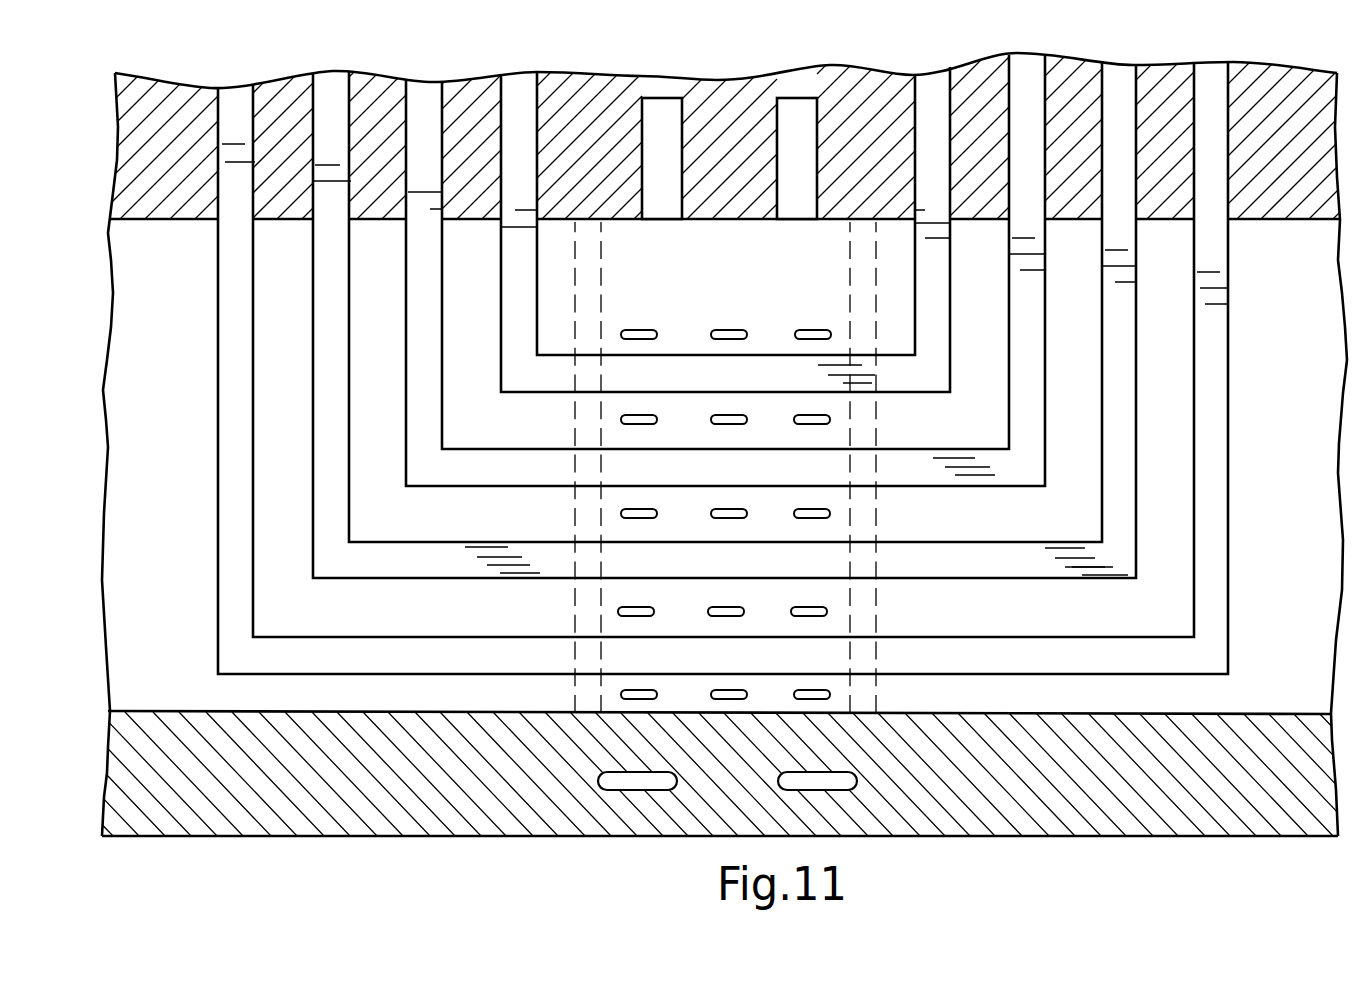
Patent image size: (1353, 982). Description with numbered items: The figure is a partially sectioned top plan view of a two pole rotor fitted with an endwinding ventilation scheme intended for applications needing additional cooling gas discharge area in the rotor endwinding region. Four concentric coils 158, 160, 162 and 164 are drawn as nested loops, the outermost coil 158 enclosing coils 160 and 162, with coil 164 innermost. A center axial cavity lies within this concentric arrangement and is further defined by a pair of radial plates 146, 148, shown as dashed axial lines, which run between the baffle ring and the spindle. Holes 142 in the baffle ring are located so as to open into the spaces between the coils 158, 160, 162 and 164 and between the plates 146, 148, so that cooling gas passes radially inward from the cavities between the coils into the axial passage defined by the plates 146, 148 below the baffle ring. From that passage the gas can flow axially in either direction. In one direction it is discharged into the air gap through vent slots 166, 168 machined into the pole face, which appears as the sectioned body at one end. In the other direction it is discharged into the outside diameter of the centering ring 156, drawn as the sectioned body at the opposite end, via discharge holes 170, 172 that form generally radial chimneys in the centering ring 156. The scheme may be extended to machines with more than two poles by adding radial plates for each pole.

The holes 142 is at (800, 331).
The radial plate 146 is at (601, 300).
The radial plate 148 is at (868, 292).
The centering ring 156 is at (1068, 813).
The coil 158 is at (211, 508).
The coil 160 is at (312, 388).
The coil 162 is at (404, 299).
The coil 164 is at (497, 252).
The vent slot 166 is at (670, 128).
The vent slot 168 is at (797, 122).
The discharge hole 170 is at (647, 782).
The discharge hole 172 is at (852, 783).